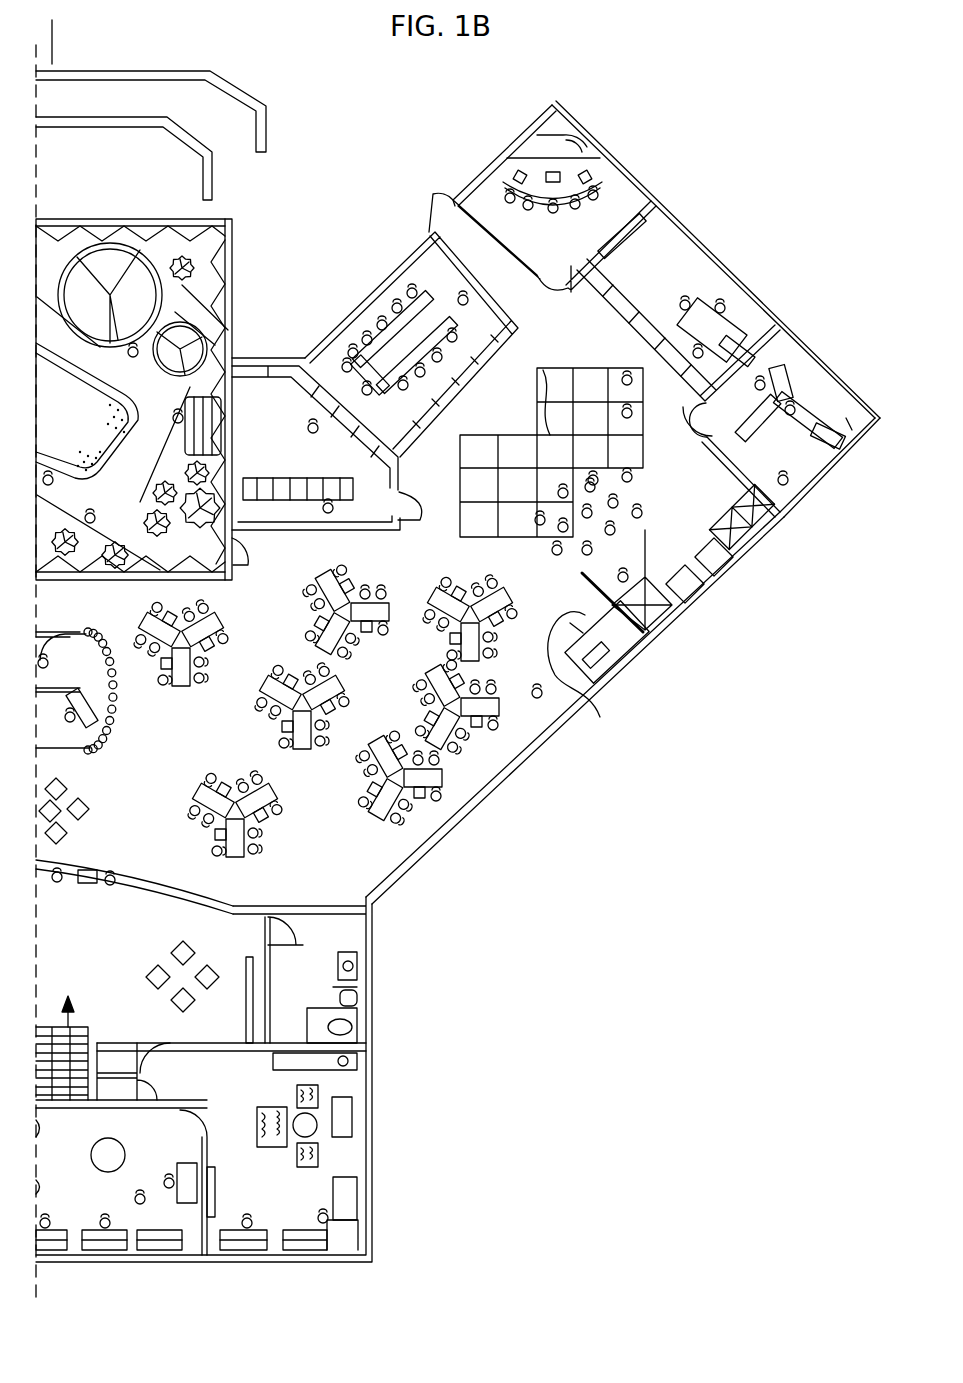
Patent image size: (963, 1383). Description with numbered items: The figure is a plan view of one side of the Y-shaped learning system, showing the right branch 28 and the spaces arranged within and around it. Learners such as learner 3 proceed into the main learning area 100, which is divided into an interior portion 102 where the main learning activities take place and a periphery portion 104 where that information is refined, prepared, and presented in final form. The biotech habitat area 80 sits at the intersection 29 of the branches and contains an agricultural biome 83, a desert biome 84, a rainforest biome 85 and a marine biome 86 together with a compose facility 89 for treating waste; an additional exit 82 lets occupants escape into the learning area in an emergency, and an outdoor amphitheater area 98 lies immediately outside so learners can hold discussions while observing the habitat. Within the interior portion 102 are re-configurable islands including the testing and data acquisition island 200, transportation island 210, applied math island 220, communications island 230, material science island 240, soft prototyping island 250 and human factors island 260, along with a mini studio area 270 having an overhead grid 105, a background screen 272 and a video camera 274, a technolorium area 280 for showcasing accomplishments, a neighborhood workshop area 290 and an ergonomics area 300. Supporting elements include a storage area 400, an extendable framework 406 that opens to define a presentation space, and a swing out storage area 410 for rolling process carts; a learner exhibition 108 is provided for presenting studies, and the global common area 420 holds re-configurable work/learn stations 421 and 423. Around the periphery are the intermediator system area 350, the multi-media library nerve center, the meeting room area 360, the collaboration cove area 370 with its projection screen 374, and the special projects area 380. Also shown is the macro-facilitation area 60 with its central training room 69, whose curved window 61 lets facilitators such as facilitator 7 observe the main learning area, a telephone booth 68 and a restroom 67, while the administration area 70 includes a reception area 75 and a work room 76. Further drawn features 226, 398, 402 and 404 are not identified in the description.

The learner 3 is at (18, 35).
The outdoor amphitheater area 98 is at (257, 98).
The rainforest biome 85 is at (178, 257).
The biotech habitat area 80 is at (237, 274).
The intersection 29 is at (239, 355).
The compose facility 89 is at (195, 303).
The marine biome 86 is at (80, 424).
The desert biome 84 is at (236, 388).
The intermediator system area 350 is at (300, 469).
The agricultural biome 83 is at (85, 545).
The additional exit 82 is at (243, 542).
The meeting room area 360 is at (413, 275).
The collaboration cove area 370 is at (567, 247).
The projection screen 374 is at (593, 143).
The periphery portion 104 is at (698, 213).
The special projects area 380 is at (670, 284).
The background screen 272 is at (545, 366).
The mini studio area 270 is at (585, 356).
The chair 226 is at (630, 376).
The overhead grid 105 is at (533, 432).
The technolorium area 280 is at (480, 455).
The video camera 274 is at (612, 425).
The neighborhood workshop area 290 is at (639, 499).
The office 398 is at (825, 448).
The extendable framework 406 is at (668, 577).
The storage unit 402 is at (760, 528).
The storage area 400 is at (746, 554).
The cabinet 404 is at (718, 560).
The right branch 28 is at (673, 637).
The swing out storage area 410 is at (630, 660).
The ergonomics area 300 is at (620, 638).
The material science island 240 is at (355, 567).
The human factors island 260 is at (462, 586).
The soft prototyping island 250 is at (418, 685).
The applied math island 220 is at (297, 673).
The communications island 230 is at (148, 618).
The testing and data acquisition island 200 is at (265, 822).
The transportation island 210 is at (344, 790).
The re-configurable work/learn station 421 is at (60, 632).
The global common area 420 is at (102, 674).
The re-configurable work/learn station 423 is at (112, 712).
The interior portion 102 is at (278, 697).
The learner exhibition 108 is at (72, 828).
The curved window 61 is at (168, 876).
The facilitator 7 is at (56, 888).
The central training room 69 is at (201, 984).
The telephone booth 68 is at (112, 1047).
The restroom 67 is at (310, 997).
The macro-facilitation area 60 is at (366, 970).
The work room 76 is at (80, 1197).
The reception area 75 is at (267, 1201).
The administration area 70 is at (369, 1220).
The main learning area 100 is at (268, 1057).